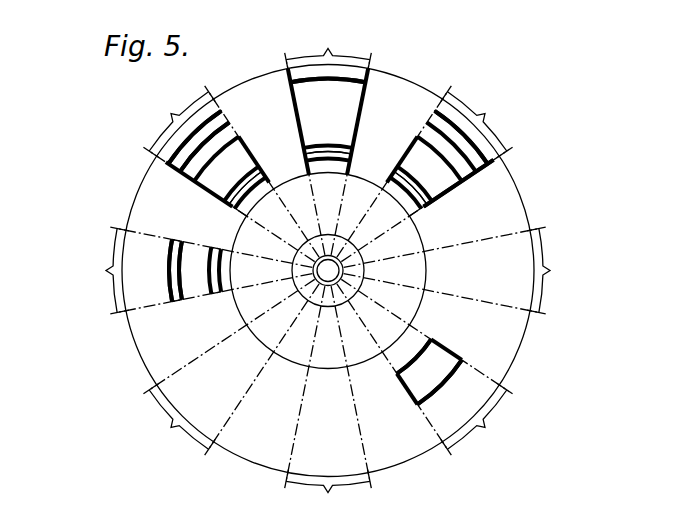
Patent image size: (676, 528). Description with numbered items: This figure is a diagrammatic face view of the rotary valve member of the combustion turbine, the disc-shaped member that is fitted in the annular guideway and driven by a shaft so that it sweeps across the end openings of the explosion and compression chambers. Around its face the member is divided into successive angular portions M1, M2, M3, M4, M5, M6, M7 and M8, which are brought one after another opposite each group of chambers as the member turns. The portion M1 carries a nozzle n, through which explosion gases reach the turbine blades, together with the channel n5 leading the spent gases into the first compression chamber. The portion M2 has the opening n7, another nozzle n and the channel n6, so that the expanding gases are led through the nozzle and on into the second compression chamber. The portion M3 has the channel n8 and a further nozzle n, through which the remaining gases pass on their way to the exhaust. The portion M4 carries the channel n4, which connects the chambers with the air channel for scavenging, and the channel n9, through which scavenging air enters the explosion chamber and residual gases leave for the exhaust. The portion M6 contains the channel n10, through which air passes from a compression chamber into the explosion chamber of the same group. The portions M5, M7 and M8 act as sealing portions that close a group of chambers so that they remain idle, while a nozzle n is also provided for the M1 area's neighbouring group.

The portion of the valve member M1 is at (153, 270).
The portion of the valve member M2 is at (208, 158).
The portion of the valve member M3 is at (328, 97).
The portion of the valve member M4 is at (440, 157).
The portion of the valve member M5 is at (552, 270).
The portion of the valve member M6 is at (449, 392).
The sealing portion M7 is at (328, 496).
The sealing portion M8 is at (178, 419).
The nozzle n is at (258, 187).
The channel n4 is at (478, 170).
The channel n5 is at (171, 261).
The channel n6 is at (224, 116).
The opening n7 is at (243, 152).
The channel n8 is at (328, 101).
The channel n9 is at (442, 186).
The channel n10 is at (410, 384).